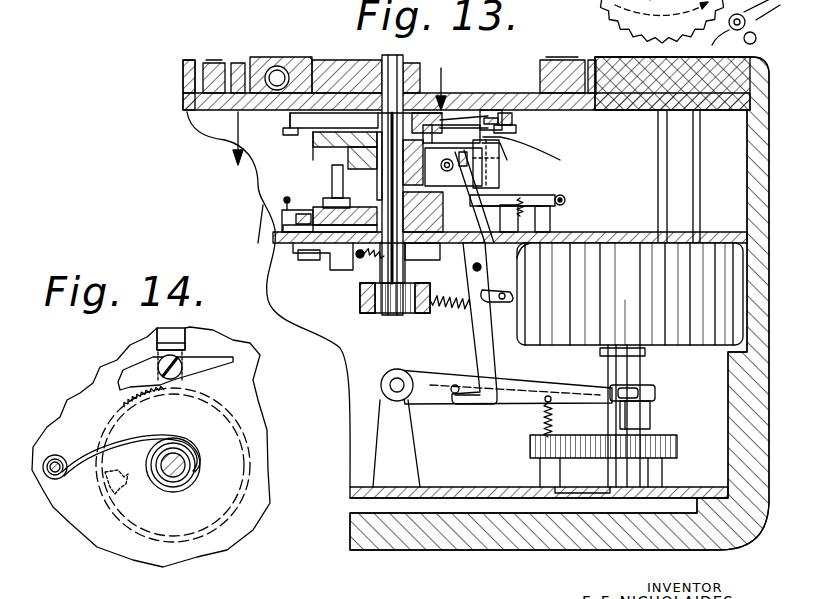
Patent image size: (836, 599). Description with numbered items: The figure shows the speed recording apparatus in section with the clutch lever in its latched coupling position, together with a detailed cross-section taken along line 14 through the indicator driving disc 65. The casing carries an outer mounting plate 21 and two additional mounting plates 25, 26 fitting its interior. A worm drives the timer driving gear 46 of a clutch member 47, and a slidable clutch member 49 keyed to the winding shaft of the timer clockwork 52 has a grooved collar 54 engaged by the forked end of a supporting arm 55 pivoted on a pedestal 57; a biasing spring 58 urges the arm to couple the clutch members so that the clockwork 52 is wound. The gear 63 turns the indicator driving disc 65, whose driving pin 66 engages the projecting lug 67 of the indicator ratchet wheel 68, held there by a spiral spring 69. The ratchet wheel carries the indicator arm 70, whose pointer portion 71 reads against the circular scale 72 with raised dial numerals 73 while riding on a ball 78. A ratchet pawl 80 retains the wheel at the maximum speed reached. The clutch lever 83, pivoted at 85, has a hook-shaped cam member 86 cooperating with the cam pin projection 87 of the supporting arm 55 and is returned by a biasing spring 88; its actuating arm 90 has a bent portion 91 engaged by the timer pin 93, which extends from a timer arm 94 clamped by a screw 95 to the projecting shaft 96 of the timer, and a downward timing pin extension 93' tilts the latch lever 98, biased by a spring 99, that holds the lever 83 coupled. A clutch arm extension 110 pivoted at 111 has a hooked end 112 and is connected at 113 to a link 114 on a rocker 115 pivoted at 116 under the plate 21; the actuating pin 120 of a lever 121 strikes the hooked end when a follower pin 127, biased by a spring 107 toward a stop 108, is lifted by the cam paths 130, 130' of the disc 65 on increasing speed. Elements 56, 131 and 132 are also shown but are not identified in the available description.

In FIG. 13, the section line 14 is at (339, 120).
In FIG. 13, the mounting plate 21 is at (183, 95).
In FIG. 13, the intermediate mounting plate 25 is at (273, 237).
In FIG. 13, the mounting plate 26 is at (350, 491).
In FIG. 13, the timer driving gear 46 is at (677, 448).
In FIG. 13, the clutch member 47 is at (648, 418).
In FIG. 13, the slidable clutch member 49 is at (650, 392).
In FIG. 13, the timer clockwork 52 is at (700, 288).
In FIG. 13, the grooved collar 54 is at (616, 358).
In FIG. 13, the supporting arm 55 is at (556, 388).
In FIG. 13, the pivot roller 56 is at (381, 385).
In FIG. 13, the pedestal 57 is at (412, 471).
In FIG. 13, the biasing spring 58 is at (543, 420).
In FIG. 13, the gear 63 is at (360, 298).
In FIG. 13, the indicator driving disc 65 is at (308, 207).
In FIG. 14, the indicator driving disc 65 is at (98, 406).
In FIG. 13, the driving pin 66 is at (332, 186).
In FIG. 14, the driving pin 66 is at (120, 492).
In FIG. 13, the projecting lug 67 is at (332, 180).
In FIG. 14, the projecting lug 67 is at (53, 500).
In FIG. 13, the indicator ratchet wheel 68 is at (328, 146).
In FIG. 14, the indicator ratchet wheel 68 is at (200, 388).
In FIG. 13, the spiral spring 69 is at (300, 130).
In FIG. 14, the spiral spring 69 is at (180, 440).
In FIG. 13, the indicator arm 70 is at (348, 75).
In FIG. 13, the pointer portion 71 is at (300, 57).
In FIG. 13, the circular scale 72 is at (240, 63).
In FIG. 13, the dial numerals 73 is at (214, 60).
In FIG. 13, the ball 78 is at (277, 66).
In FIG. 14, the ratchet pawl 80 is at (130, 350).
In FIG. 13, the clutch lever 83 is at (483, 337).
In FIG. 13, the pivot 85 is at (472, 267).
In FIG. 13, the hook-shaped cam member 86 is at (474, 405).
In FIG. 13, the cam pin projection 87 is at (452, 394).
In FIG. 13, the biasing spring 88 is at (465, 310).
In FIG. 13, the actuating arm 90 is at (505, 175).
In FIG. 13, the bent portion 91 is at (507, 160).
In FIG. 13, the timer pin 93 is at (496, 164).
In FIG. 13, the timing pin extension 93' is at (505, 214).
In FIG. 13, the timer arm 94 is at (555, 175).
In FIG. 13, the screw 95 is at (566, 199).
In FIG. 13, the projecting shaft 96 is at (551, 206).
In FIG. 13, the latch lever 98 is at (495, 318).
In FIG. 13, the spring 99 is at (522, 250).
In FIG. 13, the spring 107 is at (756, 40).
In FIG. 13, the stop 108 is at (742, 38).
In FIG. 13, the clutch arm extension 110 is at (443, 130).
In FIG. 13, the pivot 111 is at (465, 195).
In FIG. 13, the hooked end 112 is at (366, 141).
In FIG. 13, the pivotal connection 113 is at (376, 206).
In FIG. 13, the link 114 is at (468, 125).
In FIG. 13, the rocker 115 is at (503, 118).
In FIG. 13, the rocker pivot 116 is at (505, 113).
In FIG. 13, the actuating pin 120 is at (392, 55).
In FIG. 13, the lever 121 is at (395, 185).
In FIG. 13, the follower pin 127 is at (36, 8).
In FIG. 13, the cam path 130 is at (265, 299).
In FIG. 13, the cam path 130' is at (272, 254).
In FIG. 13, the ratchet wheel 131 is at (435, 21).
In FIG. 13, the arm 132 is at (72, 0).